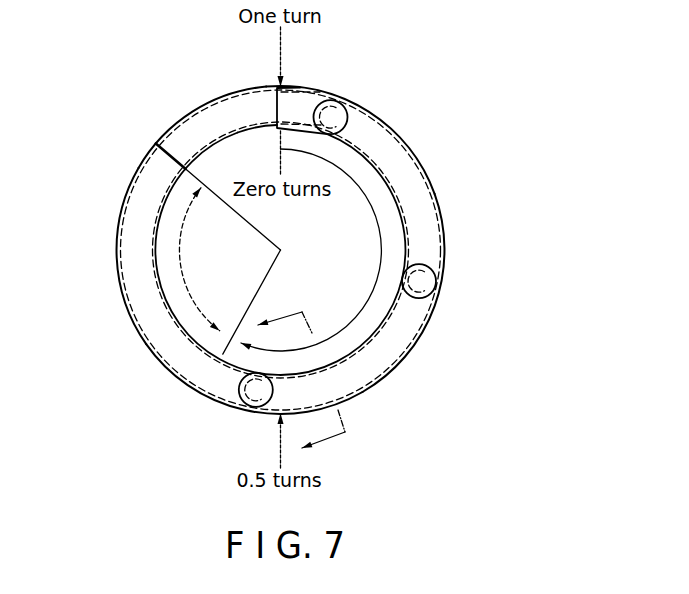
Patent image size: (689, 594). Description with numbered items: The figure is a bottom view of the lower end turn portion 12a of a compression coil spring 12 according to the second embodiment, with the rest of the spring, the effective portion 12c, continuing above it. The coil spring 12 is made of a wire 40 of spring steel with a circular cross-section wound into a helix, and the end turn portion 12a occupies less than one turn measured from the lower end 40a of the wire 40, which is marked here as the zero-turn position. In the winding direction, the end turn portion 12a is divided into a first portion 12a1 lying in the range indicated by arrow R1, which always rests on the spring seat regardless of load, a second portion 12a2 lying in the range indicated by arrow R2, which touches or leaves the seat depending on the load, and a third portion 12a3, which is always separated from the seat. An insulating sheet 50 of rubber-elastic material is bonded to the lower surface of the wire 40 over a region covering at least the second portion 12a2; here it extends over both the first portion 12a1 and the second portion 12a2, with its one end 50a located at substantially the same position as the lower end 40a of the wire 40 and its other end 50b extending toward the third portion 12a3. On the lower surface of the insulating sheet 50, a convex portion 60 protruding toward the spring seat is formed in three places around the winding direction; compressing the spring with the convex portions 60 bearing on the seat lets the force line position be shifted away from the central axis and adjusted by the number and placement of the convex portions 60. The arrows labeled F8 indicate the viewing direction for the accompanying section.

The coil spring 12 is at (291, 241).
The lower end turn portion 12a is at (430, 319).
The first portion 12a1 is at (384, 380).
The second portion 12a2 is at (130, 321).
The third portion 12a3 is at (213, 115).
The effective portion 12c is at (347, 98).
The wire 40 is at (436, 239).
The lower end of the wire 40a is at (283, 88).
The insulating sheet 50 is at (178, 360).
The one end of the insulating sheet 50a is at (277, 103).
The other end of the insulating sheet 50b is at (158, 138).
The convex portion 60 is at (348, 122).
The arrow R1 is at (375, 280).
The arrow R2 is at (180, 243).
The force F8 is at (301, 381).